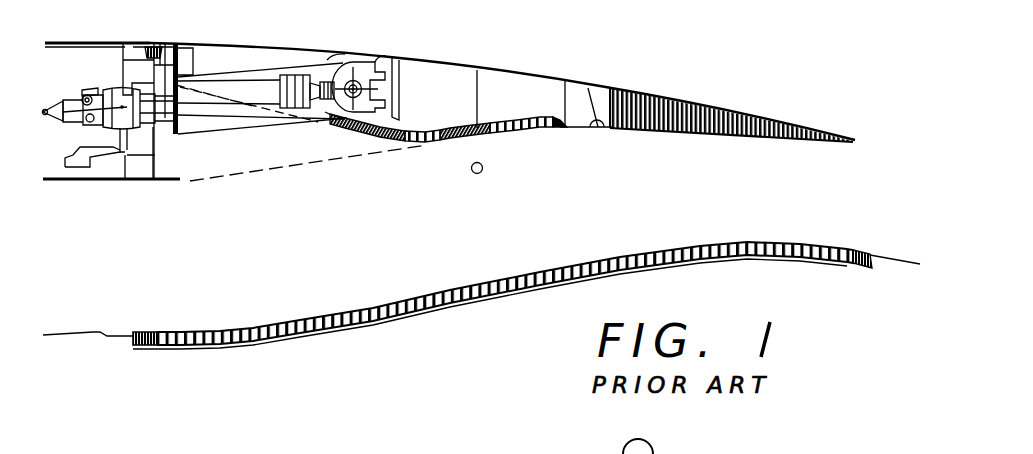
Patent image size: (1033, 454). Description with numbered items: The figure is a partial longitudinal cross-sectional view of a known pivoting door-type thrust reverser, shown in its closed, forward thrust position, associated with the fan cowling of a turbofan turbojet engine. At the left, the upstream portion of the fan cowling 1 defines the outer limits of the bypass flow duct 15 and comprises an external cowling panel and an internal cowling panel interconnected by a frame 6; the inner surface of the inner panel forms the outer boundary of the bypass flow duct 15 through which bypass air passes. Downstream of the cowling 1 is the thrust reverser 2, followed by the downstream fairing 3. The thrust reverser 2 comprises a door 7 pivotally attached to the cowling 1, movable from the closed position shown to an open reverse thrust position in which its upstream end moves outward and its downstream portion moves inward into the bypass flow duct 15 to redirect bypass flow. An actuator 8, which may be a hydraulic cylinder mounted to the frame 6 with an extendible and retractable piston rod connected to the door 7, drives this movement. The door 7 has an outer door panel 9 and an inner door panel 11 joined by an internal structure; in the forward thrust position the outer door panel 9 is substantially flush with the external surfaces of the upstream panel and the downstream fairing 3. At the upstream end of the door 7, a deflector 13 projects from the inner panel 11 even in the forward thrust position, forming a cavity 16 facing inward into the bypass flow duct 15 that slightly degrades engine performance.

The fan cowling 1 is at (125, 38).
The thrust reverser 2 is at (412, 50).
The downstream fairing 3 is at (656, 111).
The frame 6 is at (130, 156).
The thrust reverser door 7 is at (285, 56).
The actuator 8 is at (260, 88).
The outer door panel 9 is at (330, 49).
The inner door panel 11 is at (509, 145).
The deflector 13 is at (190, 132).
The bypass flow duct 15 is at (111, 226).
The cavity 16 is at (247, 153).